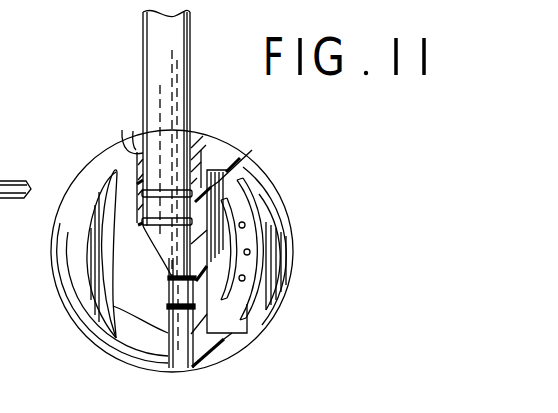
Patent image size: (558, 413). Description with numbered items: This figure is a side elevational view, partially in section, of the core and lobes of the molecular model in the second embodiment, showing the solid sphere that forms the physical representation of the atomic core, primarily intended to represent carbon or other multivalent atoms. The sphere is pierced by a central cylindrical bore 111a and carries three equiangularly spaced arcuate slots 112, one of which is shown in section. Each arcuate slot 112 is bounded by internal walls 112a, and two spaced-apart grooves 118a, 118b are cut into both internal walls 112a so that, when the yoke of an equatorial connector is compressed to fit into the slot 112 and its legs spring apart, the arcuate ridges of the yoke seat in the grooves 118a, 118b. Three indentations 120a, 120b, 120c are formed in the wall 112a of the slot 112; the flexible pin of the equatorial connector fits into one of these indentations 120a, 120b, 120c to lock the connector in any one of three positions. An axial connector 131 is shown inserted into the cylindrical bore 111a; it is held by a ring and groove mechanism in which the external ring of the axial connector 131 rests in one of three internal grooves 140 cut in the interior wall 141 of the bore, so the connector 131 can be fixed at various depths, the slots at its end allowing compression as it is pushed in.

The axial connector 131 is at (141, 31).
The interior wall 141 is at (121, 140).
The internal grooves 140 is at (197, 166).
The groove 118a is at (232, 160).
The groove 118b is at (233, 186).
The indentation 120a is at (245, 225).
The indentation 120b is at (250, 253).
The indentation 120c is at (245, 281).
The internal wall 112a is at (357, 241).
The cylindrical bore 111a is at (180, 357).
The arcuate slot 112 is at (97, 248).